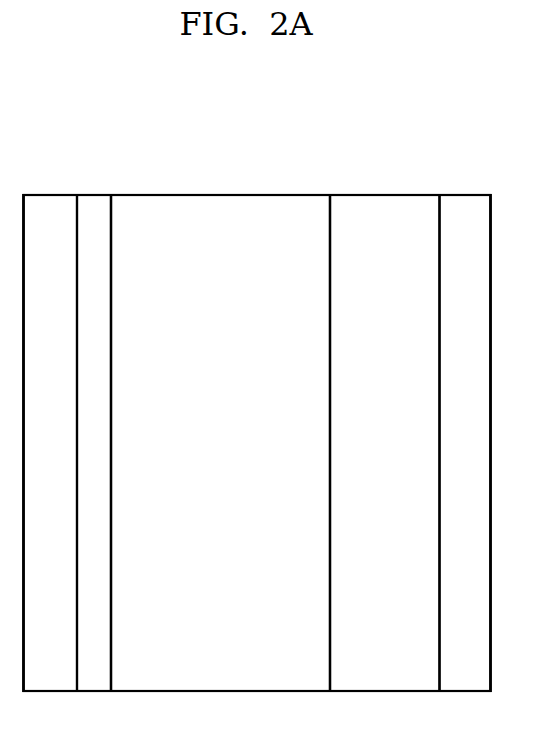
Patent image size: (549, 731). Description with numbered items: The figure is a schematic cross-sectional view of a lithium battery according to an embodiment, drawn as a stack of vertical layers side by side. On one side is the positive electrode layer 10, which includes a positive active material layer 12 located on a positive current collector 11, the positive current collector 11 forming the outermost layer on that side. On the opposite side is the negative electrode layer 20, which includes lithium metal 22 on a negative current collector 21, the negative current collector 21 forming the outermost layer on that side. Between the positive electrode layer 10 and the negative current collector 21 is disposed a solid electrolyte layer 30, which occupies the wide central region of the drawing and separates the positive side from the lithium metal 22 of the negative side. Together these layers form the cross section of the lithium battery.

The positive electrode layer 10 is at (380, 142).
The positive current collector 11 is at (462, 203).
The positive active material layer 12 is at (390, 203).
The negative electrode layer 20 is at (42, 142).
The negative current collector 21 is at (52, 203).
The lithium metal 22 is at (92, 203).
The solid electrolyte layer 30 is at (204, 203).